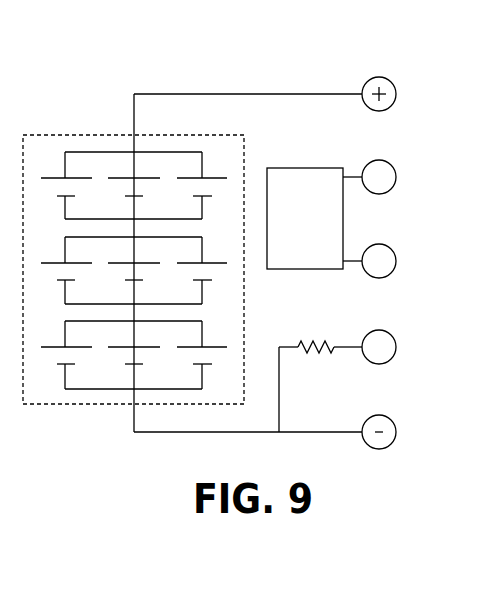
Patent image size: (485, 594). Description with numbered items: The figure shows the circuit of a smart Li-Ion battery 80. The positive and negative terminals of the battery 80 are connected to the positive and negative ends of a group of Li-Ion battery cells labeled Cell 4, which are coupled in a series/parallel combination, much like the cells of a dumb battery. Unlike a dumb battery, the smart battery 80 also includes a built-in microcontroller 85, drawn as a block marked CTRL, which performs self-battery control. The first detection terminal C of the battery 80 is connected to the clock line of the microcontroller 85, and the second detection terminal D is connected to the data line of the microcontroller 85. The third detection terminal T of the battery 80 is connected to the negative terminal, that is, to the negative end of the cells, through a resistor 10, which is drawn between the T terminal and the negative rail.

The Li-Ion smart battery 80 is at (244, 40).
The microcontroller 85 is at (310, 177).
The Cell 4 (battery cell group) 4 is at (133, 255).
The resistor R10 10 is at (320, 386).